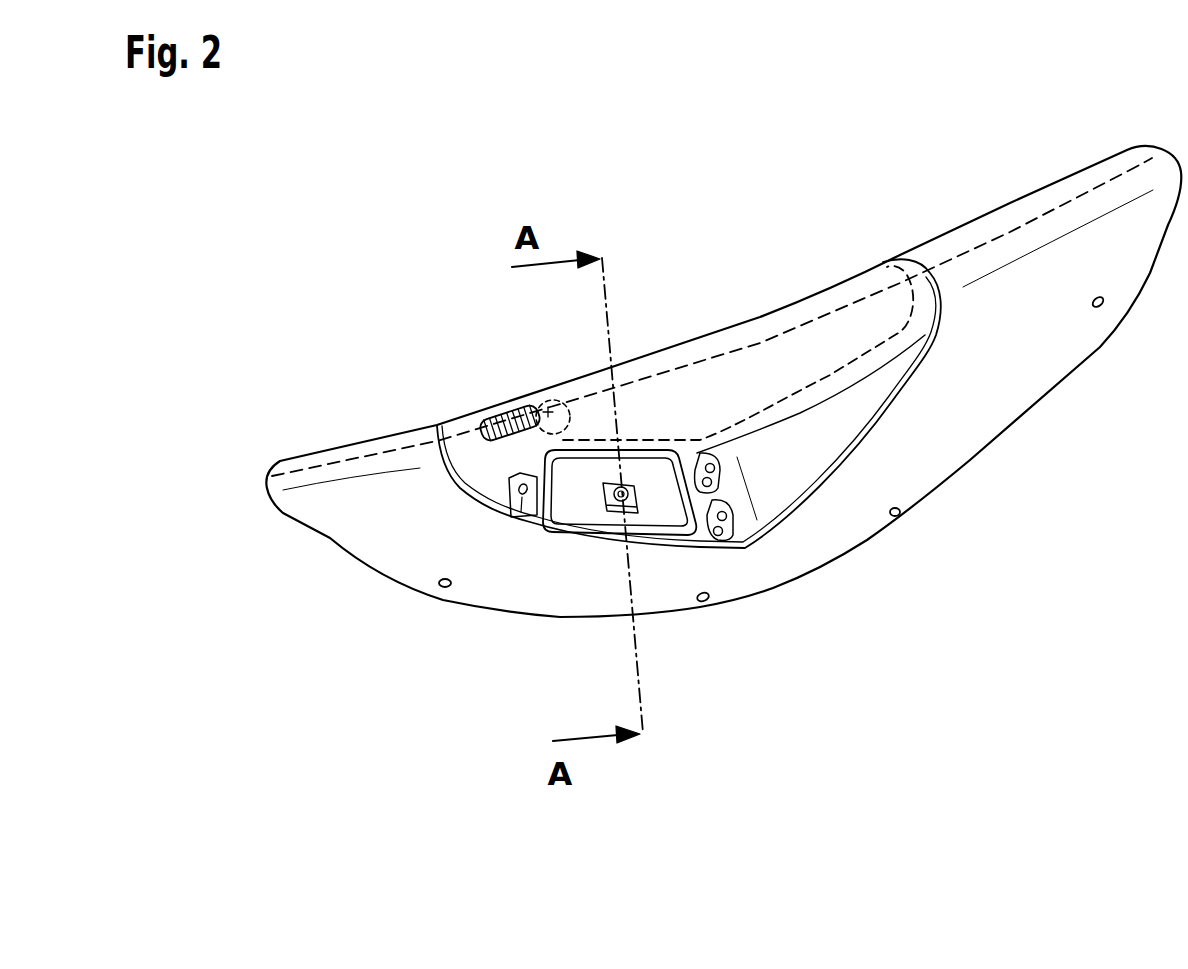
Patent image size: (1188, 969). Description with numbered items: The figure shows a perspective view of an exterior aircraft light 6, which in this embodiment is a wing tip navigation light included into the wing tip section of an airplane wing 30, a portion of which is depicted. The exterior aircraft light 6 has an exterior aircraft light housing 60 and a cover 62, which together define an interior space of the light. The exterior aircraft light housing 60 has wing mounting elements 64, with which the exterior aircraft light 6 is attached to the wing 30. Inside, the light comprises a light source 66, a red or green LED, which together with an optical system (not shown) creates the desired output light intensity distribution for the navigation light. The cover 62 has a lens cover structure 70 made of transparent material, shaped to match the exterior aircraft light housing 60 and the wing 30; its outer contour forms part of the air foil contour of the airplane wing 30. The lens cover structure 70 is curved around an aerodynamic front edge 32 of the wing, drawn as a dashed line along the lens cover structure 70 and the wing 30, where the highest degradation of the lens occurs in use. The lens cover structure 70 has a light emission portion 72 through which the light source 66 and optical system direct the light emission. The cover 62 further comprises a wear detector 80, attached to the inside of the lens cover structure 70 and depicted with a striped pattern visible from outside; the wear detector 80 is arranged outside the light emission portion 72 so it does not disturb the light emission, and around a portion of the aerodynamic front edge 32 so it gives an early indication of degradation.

The exterior aircraft light 6 is at (440, 283).
The airplane wing 30 is at (1047, 350).
The aerodynamic front edge 32 is at (347, 455).
The cover 62 is at (942, 200).
The exterior aircraft light housing 60 is at (823, 437).
The wing mounting elements 64 is at (730, 540).
The light source 66 is at (612, 515).
The lens cover structure 70 is at (563, 412).
The light emission portion 72 is at (820, 370).
The wear detector 80 is at (497, 415).